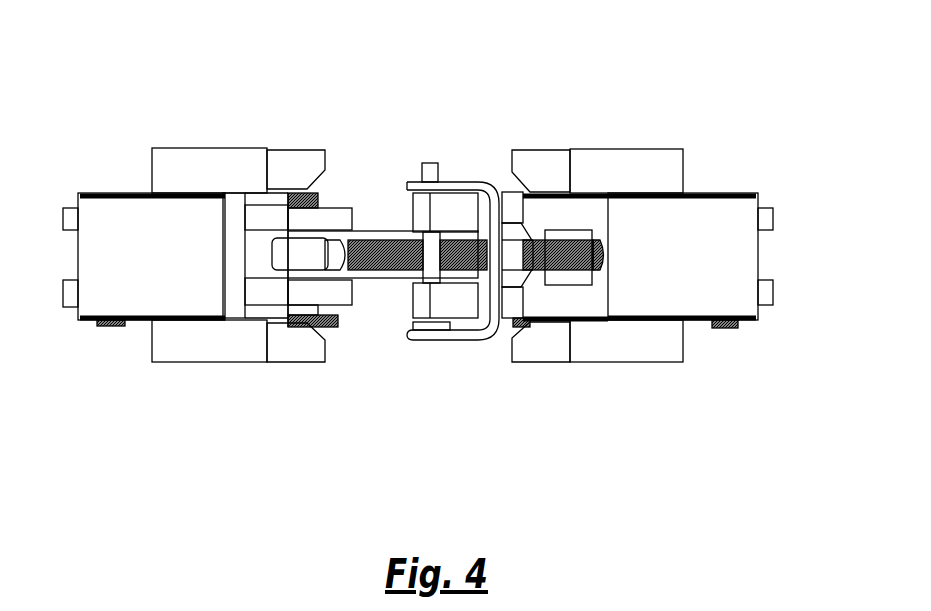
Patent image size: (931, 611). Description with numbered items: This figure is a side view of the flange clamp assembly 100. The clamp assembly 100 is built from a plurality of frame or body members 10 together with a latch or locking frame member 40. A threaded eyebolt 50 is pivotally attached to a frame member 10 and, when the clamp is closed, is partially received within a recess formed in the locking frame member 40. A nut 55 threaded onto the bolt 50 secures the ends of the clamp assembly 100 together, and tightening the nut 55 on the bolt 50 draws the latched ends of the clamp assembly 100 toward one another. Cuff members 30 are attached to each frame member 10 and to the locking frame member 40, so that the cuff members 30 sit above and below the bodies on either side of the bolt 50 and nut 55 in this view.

The frame or body member 10 is at (127, 297).
The cuff member 30 is at (207, 352).
The latch or locking frame member 40 is at (705, 217).
The threaded eyebolt 50 is at (378, 232).
The nut 55 is at (512, 228).
The flange clamp assembly 100 is at (633, 148).